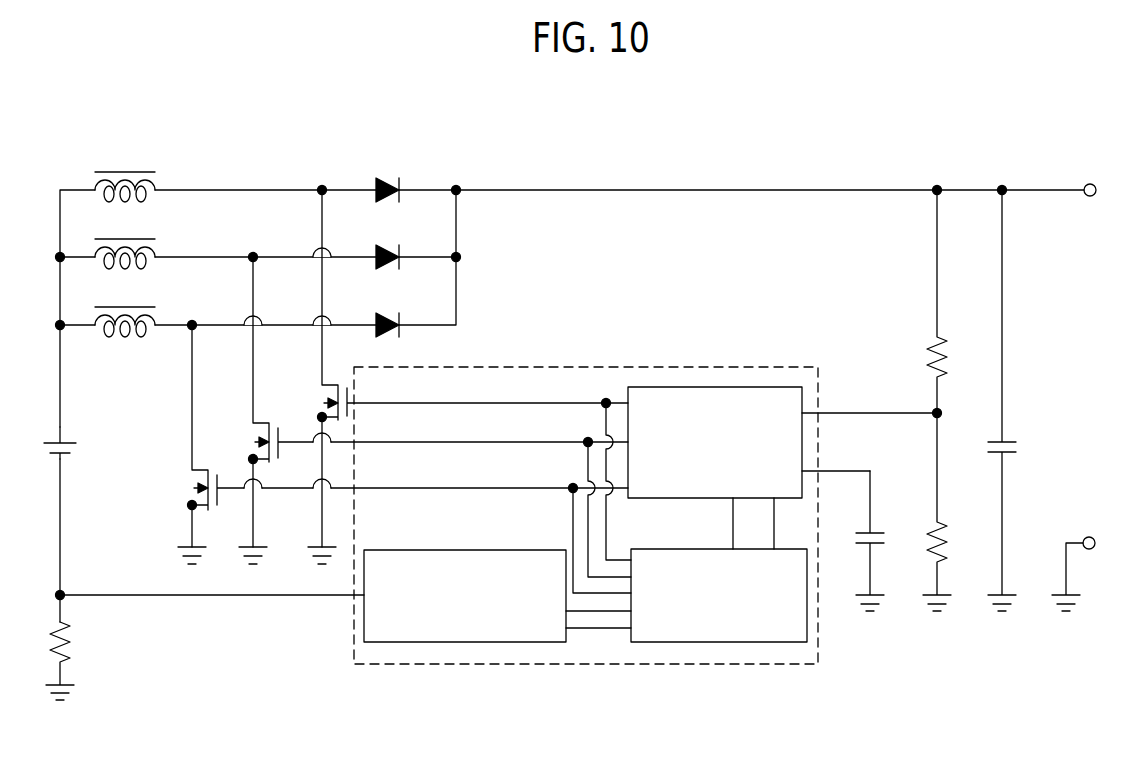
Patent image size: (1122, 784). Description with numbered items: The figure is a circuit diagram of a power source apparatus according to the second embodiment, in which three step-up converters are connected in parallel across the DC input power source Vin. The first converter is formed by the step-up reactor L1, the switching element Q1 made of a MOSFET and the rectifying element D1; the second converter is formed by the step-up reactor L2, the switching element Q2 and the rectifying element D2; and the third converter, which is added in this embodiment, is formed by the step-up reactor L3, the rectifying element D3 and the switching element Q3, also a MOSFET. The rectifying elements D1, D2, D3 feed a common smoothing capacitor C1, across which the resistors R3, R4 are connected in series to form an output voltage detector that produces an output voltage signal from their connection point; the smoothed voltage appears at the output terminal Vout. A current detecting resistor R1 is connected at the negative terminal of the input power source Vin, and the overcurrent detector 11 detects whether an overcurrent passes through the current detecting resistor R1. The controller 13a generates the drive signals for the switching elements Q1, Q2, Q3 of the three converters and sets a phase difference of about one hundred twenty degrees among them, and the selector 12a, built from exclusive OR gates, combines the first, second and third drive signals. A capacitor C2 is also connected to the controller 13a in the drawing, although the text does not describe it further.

The overcurrent detector 11 is at (423, 642).
The selector 12a is at (757, 642).
The controller 13a is at (765, 387).
The step-up reactor L1 is at (125, 172).
The step-up reactor L2 is at (125, 239).
The step-up reactor L3 is at (125, 307).
The rectifying element D1 is at (390, 174).
The rectifying element D2 is at (390, 241).
The rectifying element D3 is at (390, 309).
The switching element Q1 is at (454, 377).
The switching element Q2 is at (418, 410).
The switching element Q3 is at (388, 444).
The current detecting resistor R1 is at (75, 661).
The resistor R3 is at (954, 301).
The resistor R4 is at (952, 512).
The smoothing capacitor C1 is at (1021, 400).
The capacitor C2 is at (851, 541).
The input power source Vin is at (85, 444).
The output voltage terminal Vout is at (1085, 205).